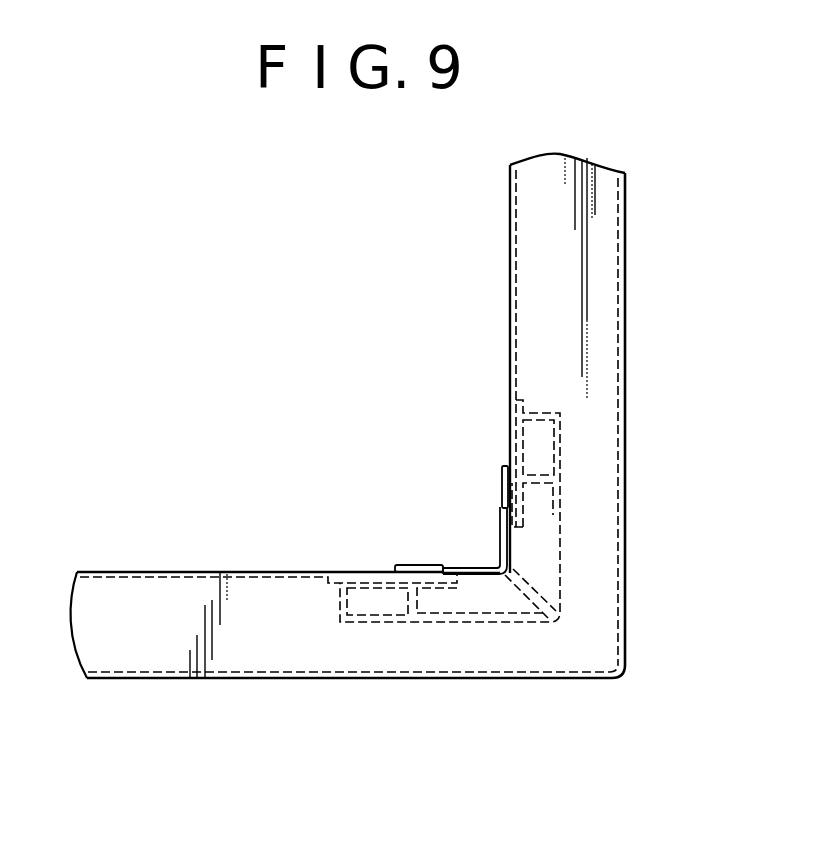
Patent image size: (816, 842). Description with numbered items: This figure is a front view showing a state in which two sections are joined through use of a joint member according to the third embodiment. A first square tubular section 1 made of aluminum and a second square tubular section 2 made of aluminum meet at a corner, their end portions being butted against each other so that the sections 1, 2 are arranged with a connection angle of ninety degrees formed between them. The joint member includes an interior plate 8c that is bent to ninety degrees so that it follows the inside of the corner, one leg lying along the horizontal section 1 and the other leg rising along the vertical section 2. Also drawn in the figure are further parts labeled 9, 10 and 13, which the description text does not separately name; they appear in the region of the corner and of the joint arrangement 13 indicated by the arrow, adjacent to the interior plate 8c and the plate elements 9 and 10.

The first square tubular section 1 is at (148, 598).
The second square tubular section 2 is at (537, 275).
The interior plate 8c is at (502, 540).
The plate 9 is at (415, 566).
The plate 10 is at (502, 472).
The joint assembly 13 is at (570, 498).